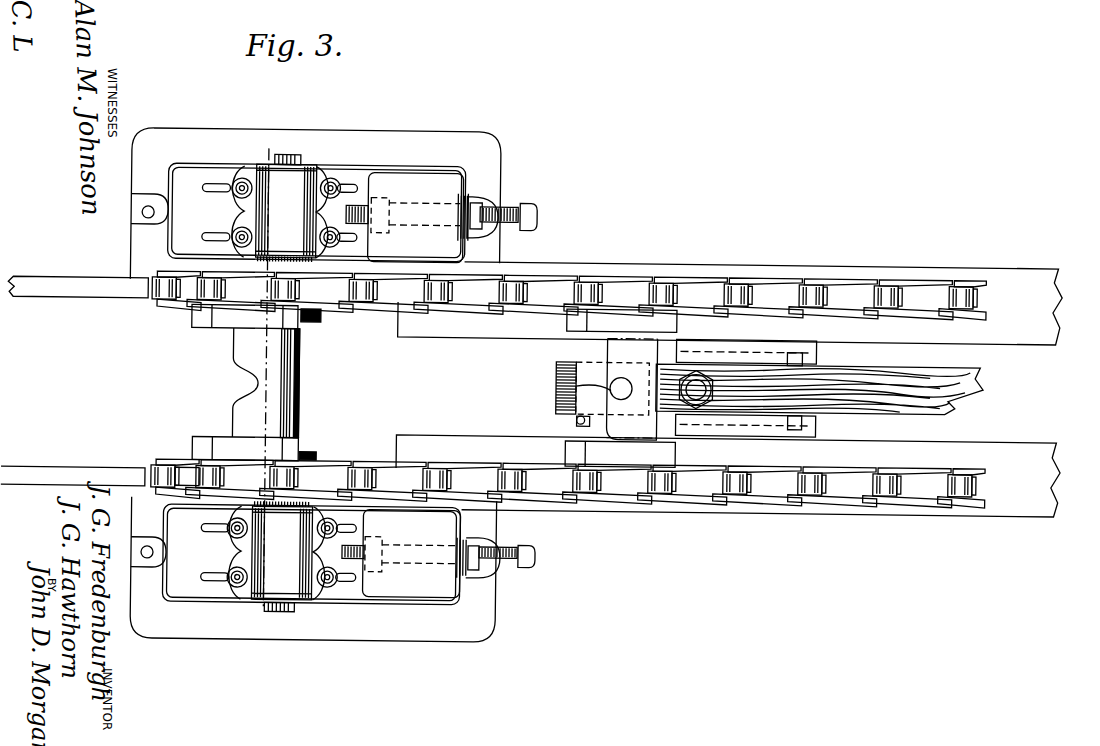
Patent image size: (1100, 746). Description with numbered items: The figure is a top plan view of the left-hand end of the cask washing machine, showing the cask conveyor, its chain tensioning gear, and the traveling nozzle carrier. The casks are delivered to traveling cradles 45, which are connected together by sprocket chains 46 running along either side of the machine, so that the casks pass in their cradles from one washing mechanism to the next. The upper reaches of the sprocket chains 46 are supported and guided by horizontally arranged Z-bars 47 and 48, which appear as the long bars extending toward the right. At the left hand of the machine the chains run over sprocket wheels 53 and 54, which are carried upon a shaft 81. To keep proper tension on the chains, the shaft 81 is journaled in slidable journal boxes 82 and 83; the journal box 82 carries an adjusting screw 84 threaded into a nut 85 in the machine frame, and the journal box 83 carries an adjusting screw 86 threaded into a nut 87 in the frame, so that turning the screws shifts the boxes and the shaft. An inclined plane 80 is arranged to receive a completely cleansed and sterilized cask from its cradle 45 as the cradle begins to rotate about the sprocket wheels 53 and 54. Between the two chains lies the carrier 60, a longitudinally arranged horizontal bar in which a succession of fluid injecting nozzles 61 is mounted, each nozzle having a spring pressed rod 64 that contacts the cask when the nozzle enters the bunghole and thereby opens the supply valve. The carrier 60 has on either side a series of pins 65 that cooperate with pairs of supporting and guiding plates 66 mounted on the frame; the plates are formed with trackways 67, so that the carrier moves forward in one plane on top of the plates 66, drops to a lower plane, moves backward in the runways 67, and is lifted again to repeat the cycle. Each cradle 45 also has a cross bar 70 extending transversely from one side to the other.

The traveling cradle 45 is at (203, 331).
The sprocket chain 46 is at (840, 276).
The Z-bar 47 is at (1057, 294).
The Z-bar 48 is at (1052, 461).
The sprocket wheel 53 is at (322, 308).
The sprocket wheel 54 is at (186, 474).
The carrier 60 is at (957, 388).
The fluid injecting nozzle 61 is at (557, 380).
The spring pressed rod 64 is at (577, 420).
The pin 65 is at (808, 353).
The supporting and guiding plate 66 is at (818, 428).
The trackway 67 is at (806, 418).
The cross bar 70 is at (607, 350).
The inclined plane 80 is at (72, 302).
The shaft 81 is at (302, 406).
The journal box 82 is at (240, 172).
The journal box 83 is at (238, 604).
The adjusting screw 84 is at (508, 205).
The nut 85 is at (372, 200).
The adjusting screw 86 is at (508, 567).
The nut 87 is at (378, 575).